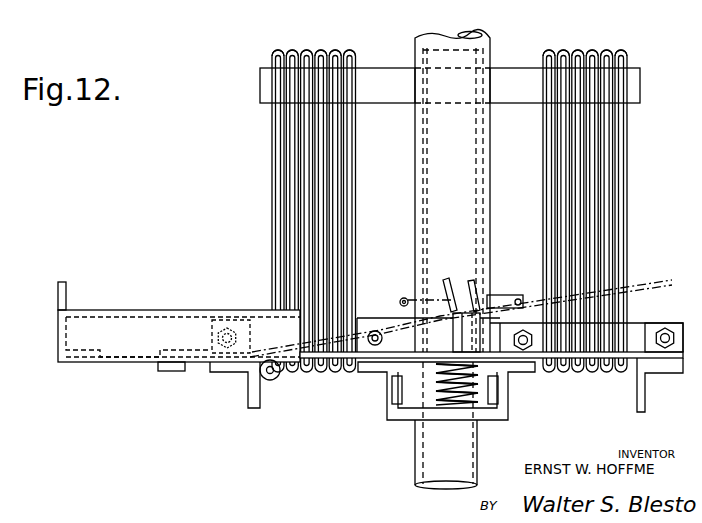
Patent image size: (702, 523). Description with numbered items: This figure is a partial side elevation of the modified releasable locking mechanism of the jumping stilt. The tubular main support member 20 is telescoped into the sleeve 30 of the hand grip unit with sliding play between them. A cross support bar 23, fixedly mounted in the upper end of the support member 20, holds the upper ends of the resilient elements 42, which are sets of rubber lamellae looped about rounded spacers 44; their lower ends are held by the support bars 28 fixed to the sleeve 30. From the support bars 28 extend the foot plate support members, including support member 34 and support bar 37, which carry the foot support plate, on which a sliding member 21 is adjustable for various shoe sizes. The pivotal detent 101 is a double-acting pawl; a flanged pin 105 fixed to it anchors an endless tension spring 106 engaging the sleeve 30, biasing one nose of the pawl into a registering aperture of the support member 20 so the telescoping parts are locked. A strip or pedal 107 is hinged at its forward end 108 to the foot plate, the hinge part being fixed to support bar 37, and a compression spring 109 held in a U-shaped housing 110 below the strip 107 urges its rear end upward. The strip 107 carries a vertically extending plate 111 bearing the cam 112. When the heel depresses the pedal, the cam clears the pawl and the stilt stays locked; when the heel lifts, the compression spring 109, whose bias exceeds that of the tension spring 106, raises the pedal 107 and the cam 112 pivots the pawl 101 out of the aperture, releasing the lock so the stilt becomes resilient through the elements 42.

The main support member 20 is at (434, 450).
The sliding member 21 is at (133, 310).
The cross support bar 23 is at (385, 92).
The support bar 28 is at (634, 326).
The sleeve 30 is at (492, 46).
The foot support plate support member 34 is at (646, 396).
The foot plate support bar 37 is at (251, 391).
The resilient elements 42 is at (448, 193).
The rounded spacers 44 is at (314, 57).
The pivotal detent 101 is at (523, 312).
The pin 105 is at (500, 294).
The tension spring 106 is at (404, 298).
The strip 107 is at (652, 285).
The forward end 108 is at (274, 381).
The compression spring 109 is at (476, 398).
The U-shaped housing 110 is at (502, 410).
The vertically extending plate 111 is at (490, 340).
The cam 112 is at (452, 278).